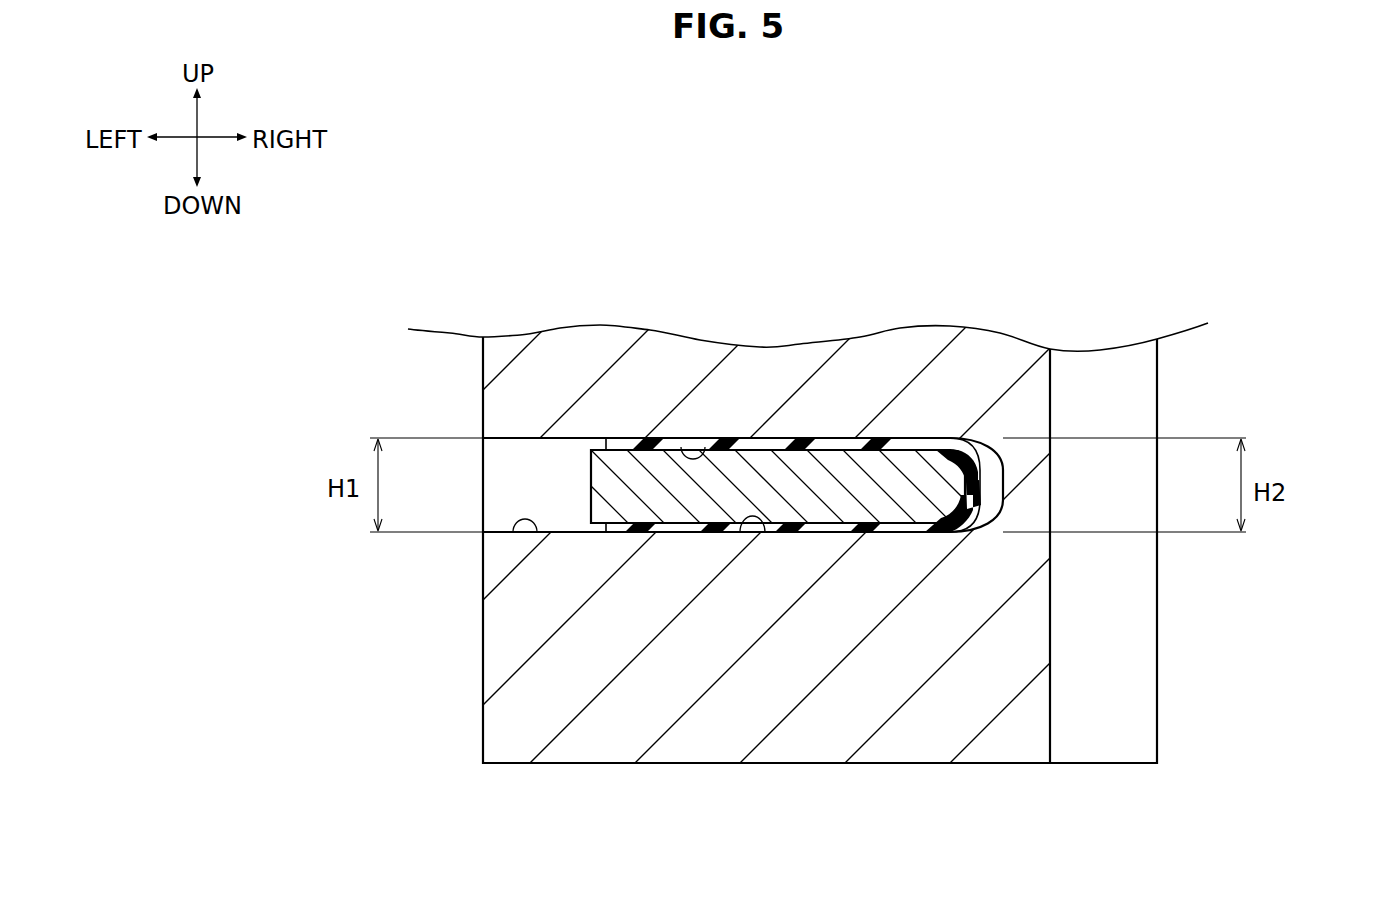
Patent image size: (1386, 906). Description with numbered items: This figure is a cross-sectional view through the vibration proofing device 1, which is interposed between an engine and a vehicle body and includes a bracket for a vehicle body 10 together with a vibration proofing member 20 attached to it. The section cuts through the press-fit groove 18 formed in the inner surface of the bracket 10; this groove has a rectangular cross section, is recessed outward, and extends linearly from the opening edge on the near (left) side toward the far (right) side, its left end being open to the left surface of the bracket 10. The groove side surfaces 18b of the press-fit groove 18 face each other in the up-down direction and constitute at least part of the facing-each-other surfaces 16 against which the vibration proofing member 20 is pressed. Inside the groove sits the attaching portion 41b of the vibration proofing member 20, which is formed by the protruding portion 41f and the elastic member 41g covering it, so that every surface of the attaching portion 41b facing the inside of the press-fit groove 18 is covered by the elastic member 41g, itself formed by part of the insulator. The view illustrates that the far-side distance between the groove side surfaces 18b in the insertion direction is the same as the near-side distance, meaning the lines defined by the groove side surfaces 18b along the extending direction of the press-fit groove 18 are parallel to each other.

The vibration proofing device 1 is at (457, 229).
The bracket for a vehicle body 10 is at (483, 390).
The facing-each-other surfaces 16 is at (778, 544).
The press-fit groove 18 is at (513, 532).
The groove side surfaces 18b is at (682, 445).
The vibration proofing member 20 is at (793, 396).
The attaching portion 41b is at (840, 438).
The protruding portion 41f is at (628, 487).
The elastic member 41g is at (827, 532).